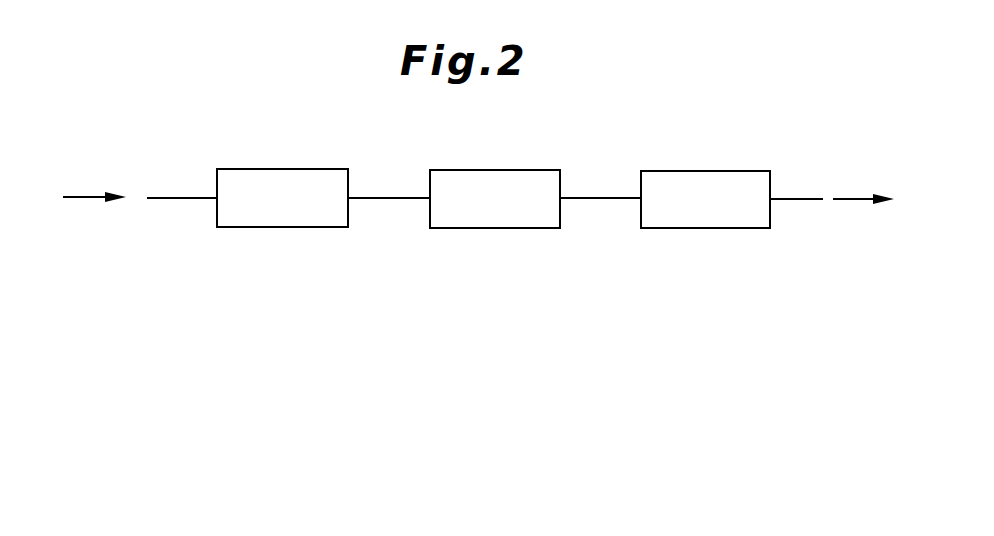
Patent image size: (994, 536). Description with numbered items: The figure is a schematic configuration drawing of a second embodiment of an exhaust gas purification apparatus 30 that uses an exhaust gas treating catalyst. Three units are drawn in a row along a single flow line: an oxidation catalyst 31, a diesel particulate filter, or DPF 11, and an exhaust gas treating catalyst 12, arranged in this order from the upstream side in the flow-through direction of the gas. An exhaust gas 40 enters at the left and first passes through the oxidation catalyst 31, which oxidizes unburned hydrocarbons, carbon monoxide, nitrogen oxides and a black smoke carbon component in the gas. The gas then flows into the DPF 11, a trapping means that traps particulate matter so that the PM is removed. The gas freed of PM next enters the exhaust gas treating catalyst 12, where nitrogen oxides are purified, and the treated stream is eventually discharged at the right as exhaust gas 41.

The exhaust gas purification apparatus 30 is at (485, 333).
The oxidation catalyst 31 is at (268, 227).
The diesel particulate filter (DPF) 11 is at (498, 228).
The exhaust gas treating catalyst 12 is at (685, 228).
The exhaust gas 40 is at (88, 195).
The exhaust gas 41 is at (856, 199).